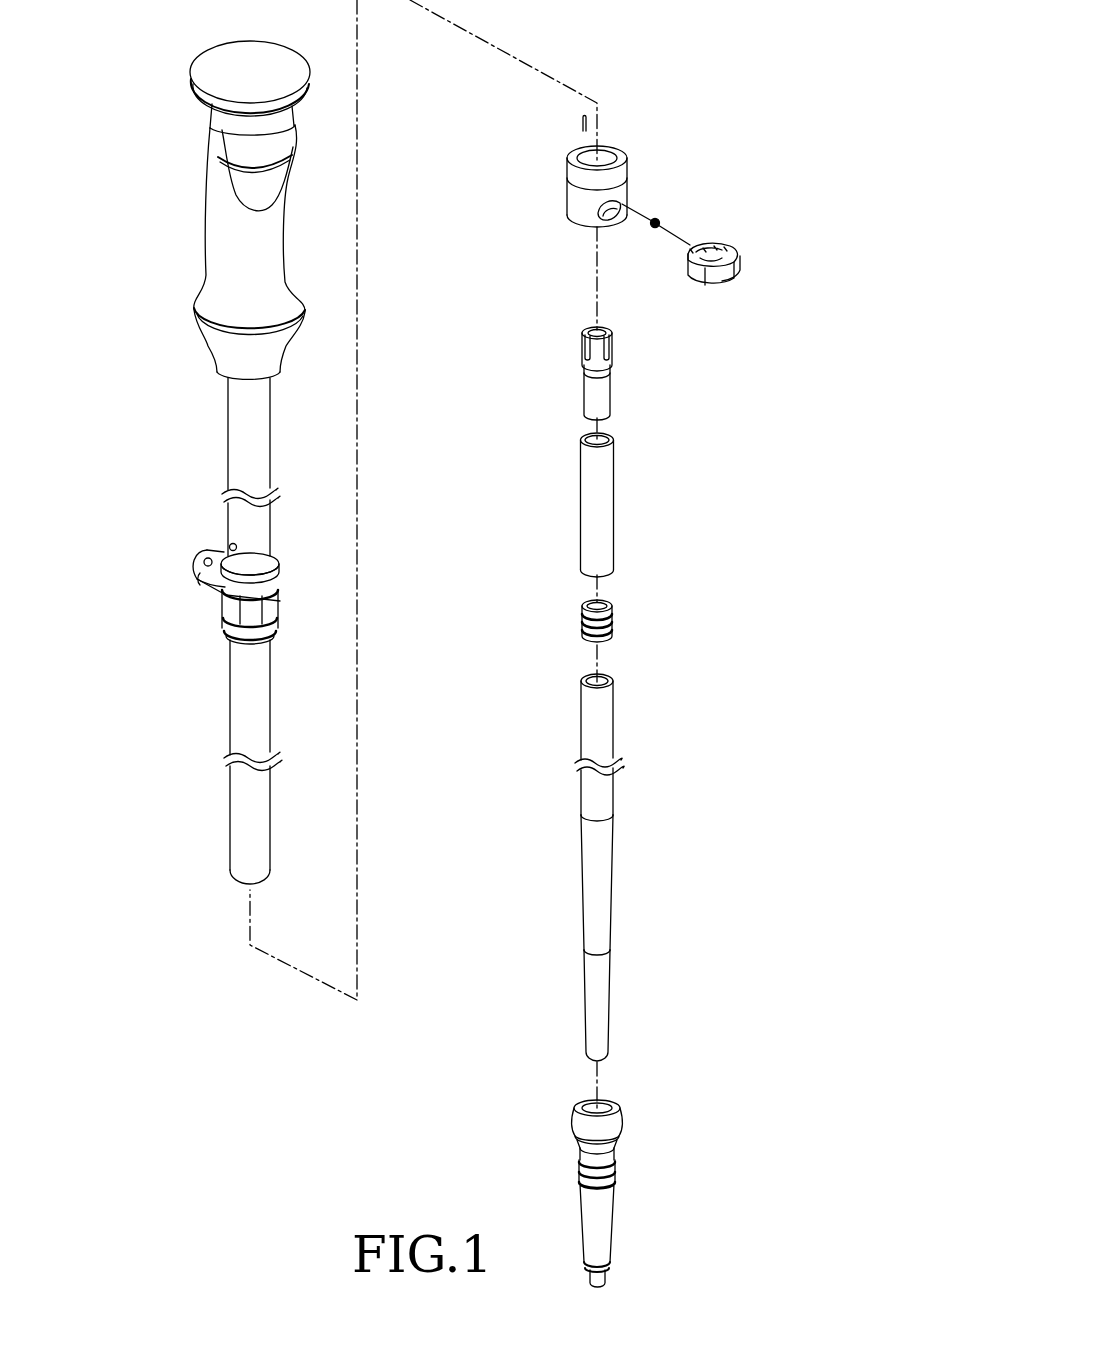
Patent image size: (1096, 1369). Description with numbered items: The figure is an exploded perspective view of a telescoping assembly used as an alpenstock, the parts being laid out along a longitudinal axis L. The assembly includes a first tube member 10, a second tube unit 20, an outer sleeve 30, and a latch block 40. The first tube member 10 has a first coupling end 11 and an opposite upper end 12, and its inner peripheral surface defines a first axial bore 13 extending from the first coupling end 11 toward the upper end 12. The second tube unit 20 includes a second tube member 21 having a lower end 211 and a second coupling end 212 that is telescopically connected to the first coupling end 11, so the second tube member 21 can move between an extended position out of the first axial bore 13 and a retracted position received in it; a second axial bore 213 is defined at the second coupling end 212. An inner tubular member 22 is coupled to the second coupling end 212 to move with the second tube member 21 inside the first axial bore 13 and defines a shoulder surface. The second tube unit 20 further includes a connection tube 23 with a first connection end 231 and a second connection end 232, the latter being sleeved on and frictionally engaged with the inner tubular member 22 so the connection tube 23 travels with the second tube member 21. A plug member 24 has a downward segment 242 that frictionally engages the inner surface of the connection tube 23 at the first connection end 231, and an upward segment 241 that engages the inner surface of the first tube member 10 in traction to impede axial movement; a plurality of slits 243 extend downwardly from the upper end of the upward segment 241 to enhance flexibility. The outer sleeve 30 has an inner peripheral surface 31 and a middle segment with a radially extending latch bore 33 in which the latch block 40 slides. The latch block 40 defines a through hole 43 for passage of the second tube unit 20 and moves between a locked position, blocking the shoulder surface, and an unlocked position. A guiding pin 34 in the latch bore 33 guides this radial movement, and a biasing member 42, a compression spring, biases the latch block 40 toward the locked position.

The first tube member 10 is at (205, 483).
The first coupling end 11 is at (250, 857).
The upper end 12 is at (250, 660).
The first axial bore 13 is at (255, 868).
The longitudinal axis L is at (357, 848).
The second tube unit 20 is at (606, 936).
The second tube member 21 is at (609, 866).
The lower end 211 is at (610, 1060).
The second coupling end 212 is at (587, 700).
The second axial bore 213 is at (612, 680).
The inner tubular member 22 is at (580, 616).
The connection tube 23 is at (599, 506).
The first connection end 231 is at (600, 457).
The second connection end 232 is at (598, 566).
The plug member 24 is at (589, 369).
The upward segment 241 is at (588, 332).
The downward segment 242 is at (600, 398).
The slits 243 is at (608, 330).
The outer sleeve 30 is at (591, 206).
The inner peripheral surface 31 is at (592, 160).
The latch bore 33 is at (611, 212).
The guiding pin 34 is at (580, 125).
The latch block 40 is at (730, 211).
The biasing member 42 is at (660, 220).
The through hole 43 is at (720, 256).